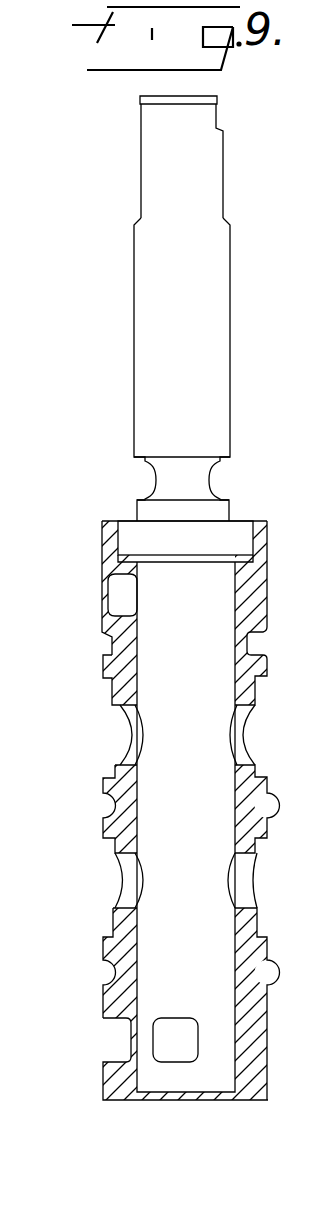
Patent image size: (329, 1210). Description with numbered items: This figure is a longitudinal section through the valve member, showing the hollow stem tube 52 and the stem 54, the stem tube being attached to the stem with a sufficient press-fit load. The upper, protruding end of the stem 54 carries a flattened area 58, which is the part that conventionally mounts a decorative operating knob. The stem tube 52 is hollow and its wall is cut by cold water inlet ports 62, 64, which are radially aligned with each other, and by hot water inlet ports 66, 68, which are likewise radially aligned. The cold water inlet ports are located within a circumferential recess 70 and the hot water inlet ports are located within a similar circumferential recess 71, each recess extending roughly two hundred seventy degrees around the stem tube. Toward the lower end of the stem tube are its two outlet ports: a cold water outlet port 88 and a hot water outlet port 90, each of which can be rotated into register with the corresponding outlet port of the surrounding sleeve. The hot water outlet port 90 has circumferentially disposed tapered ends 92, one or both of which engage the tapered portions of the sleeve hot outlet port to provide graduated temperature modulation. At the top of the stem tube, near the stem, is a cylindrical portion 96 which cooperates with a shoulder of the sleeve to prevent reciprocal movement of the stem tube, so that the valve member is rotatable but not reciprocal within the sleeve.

The stem tube 52 is at (107, 540).
The stem 54 is at (218, 323).
The flattened area 58 is at (141, 173).
The cold water inlet port 62 is at (247, 880).
The cold water inlet port 64 is at (120, 876).
The hot water inlet port 66 is at (257, 710).
The hot water inlet port 68 is at (122, 714).
The circumferential recess 70 is at (113, 925).
The circumferential recess 71 is at (113, 696).
The cold water outlet port 88 is at (112, 1060).
The hot water outlet port 90 is at (112, 604).
The tapered ends 92 is at (106, 582).
The cylindrical portion 96 is at (258, 520).